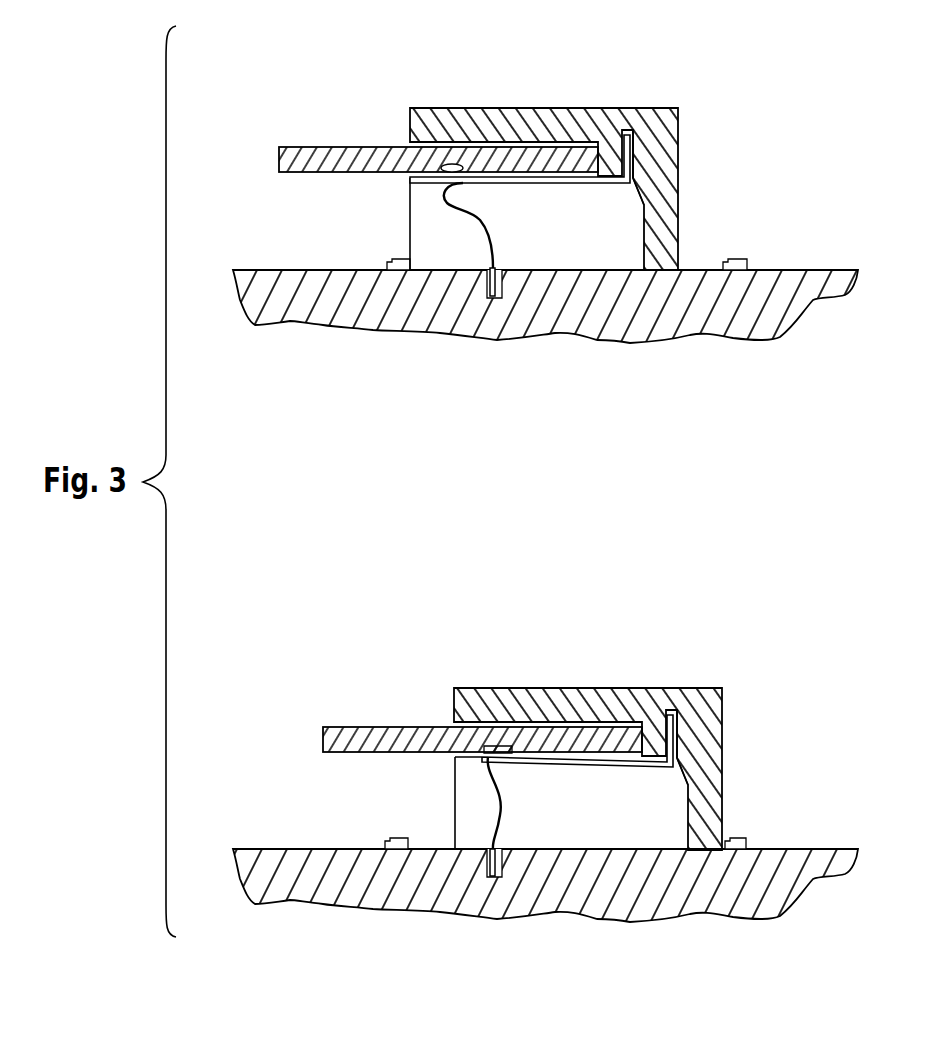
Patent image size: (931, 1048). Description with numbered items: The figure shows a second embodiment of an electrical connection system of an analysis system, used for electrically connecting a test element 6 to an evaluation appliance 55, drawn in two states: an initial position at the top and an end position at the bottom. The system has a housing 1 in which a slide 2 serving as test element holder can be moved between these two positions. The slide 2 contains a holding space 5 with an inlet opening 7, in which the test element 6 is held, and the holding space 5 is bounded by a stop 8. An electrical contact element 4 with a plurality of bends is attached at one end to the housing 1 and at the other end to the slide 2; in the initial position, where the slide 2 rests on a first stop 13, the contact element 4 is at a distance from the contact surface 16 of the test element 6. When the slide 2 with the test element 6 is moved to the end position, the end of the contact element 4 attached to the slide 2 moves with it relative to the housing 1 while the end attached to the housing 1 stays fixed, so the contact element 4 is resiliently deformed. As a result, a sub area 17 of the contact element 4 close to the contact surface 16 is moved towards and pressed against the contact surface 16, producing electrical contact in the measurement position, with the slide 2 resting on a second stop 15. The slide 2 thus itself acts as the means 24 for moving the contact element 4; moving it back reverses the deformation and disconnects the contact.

The housing 1 is at (276, 291).
The slide 2 is at (583, 126).
The electrical contact element 4 is at (558, 183).
The holding space 5 is at (504, 140).
The test element 6 is at (309, 173).
The inlet opening 7 is at (405, 141).
The stop 8 is at (598, 158).
The first stop 13 is at (397, 259).
The second stop 15 is at (736, 259).
The contact surface 16 is at (448, 162).
The sub area 17 is at (478, 194).
The means for moving the contact element 24 is at (627, 196).
The evaluation appliance 55 is at (729, 110).